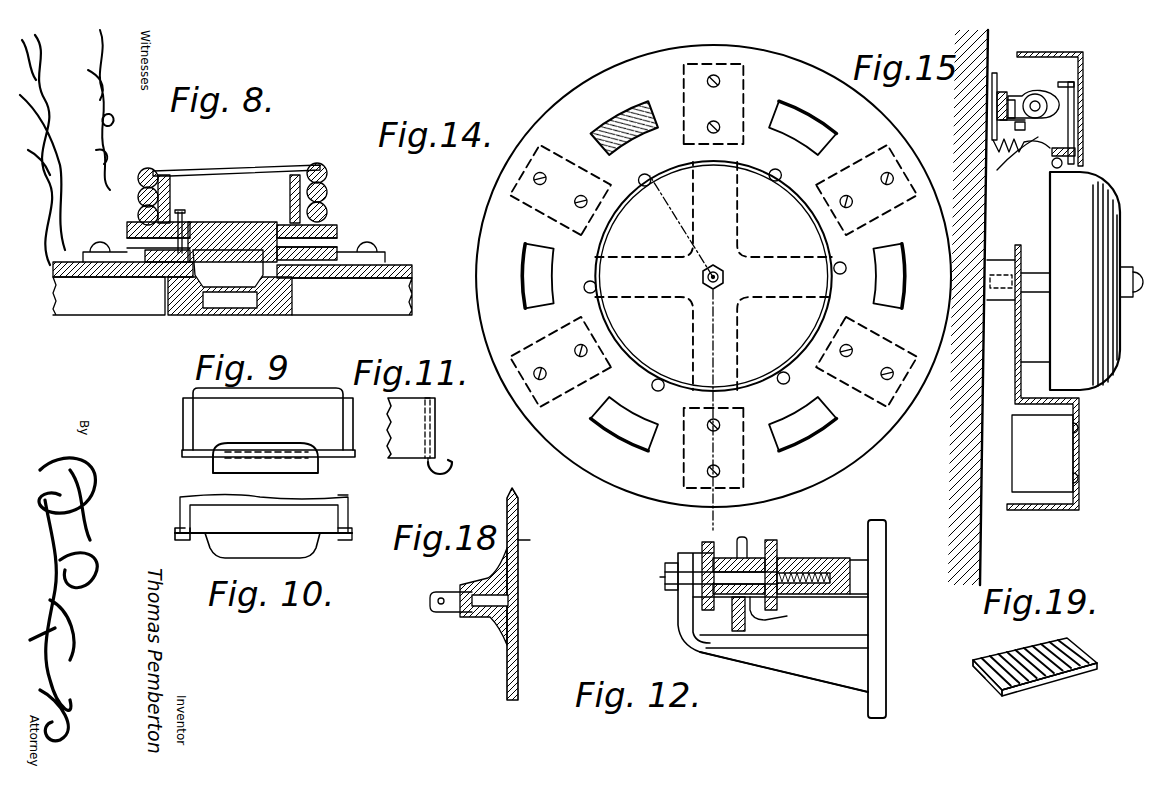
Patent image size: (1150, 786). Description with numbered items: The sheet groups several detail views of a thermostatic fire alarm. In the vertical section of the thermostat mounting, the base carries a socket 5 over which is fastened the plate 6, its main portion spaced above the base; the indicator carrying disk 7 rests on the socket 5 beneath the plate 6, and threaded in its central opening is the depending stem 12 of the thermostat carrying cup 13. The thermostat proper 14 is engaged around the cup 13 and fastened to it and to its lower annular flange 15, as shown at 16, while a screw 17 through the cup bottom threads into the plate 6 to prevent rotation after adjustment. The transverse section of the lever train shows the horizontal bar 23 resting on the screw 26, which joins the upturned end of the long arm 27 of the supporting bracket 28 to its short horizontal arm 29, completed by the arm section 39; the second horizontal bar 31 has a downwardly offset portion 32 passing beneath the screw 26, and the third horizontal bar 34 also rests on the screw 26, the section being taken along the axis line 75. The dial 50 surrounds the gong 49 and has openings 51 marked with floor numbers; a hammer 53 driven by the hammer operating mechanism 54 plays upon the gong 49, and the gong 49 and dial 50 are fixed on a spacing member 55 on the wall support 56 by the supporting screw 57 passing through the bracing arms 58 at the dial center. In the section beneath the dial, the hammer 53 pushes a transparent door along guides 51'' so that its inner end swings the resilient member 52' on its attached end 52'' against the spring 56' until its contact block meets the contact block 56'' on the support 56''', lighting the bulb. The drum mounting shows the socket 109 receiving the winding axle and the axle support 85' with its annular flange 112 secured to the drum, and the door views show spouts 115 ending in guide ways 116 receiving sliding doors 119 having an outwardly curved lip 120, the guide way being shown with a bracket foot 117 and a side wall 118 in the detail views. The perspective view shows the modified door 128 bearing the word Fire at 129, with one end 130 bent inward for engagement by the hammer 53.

In FIG. 8, the socket 5 is at (300, 286).
In FIG. 8, the plate 6 is at (122, 251).
In FIG. 8, the indicator carrying disk 7 is at (230, 282).
In FIG. 8, the depending stem 12 is at (172, 282).
In FIG. 8, the thermostat carrying cup 13 is at (170, 176).
In FIG. 8, the thermostat proper 14 is at (325, 205).
In FIG. 8, the annular flange 15 is at (330, 235).
In FIG. 14, the annular flange 15 is at (593, 85).
In FIG. 8, the fastening 16 is at (292, 215).
In FIG. 8, the screw 17 is at (186, 212).
In FIG. 12, the horizontal bar 23 is at (700, 604).
In FIG. 12, the screw 26 is at (782, 613).
In FIG. 12, the arm 27 is at (812, 655).
In FIG. 12, the supporting bracket 28 is at (878, 620).
In FIG. 12, the horizontal arm 29 is at (870, 578).
In FIG. 12, the second horizontal bar 31 is at (750, 538).
In FIG. 12, the offset portion 32 is at (732, 625).
In FIG. 12, the third horizontal bar 34 is at (778, 546).
In FIG. 12, the arm section 39 is at (700, 550).
In FIG. 14, the gong 49 is at (640, 238).
In FIG. 15, the gong 49 is at (1095, 202).
In FIG. 14, the dial 50 is at (492, 193).
In FIG. 15, the dial 50 is at (1030, 46).
In FIG. 14, the openings 51 is at (711, 292).
In FIG. 15, the openings 51 is at (1093, 116).
In FIG. 15, the guides 51'' is at (1033, 91).
In FIG. 15, the resilient member 52' is at (986, 156).
In FIG. 15, the attached end 52'' is at (966, 122).
In FIG. 14, the hammer 53 is at (774, 175).
In FIG. 15, the hammer 53 is at (1053, 168).
In FIG. 14, the hammer operating mechanism 54 is at (830, 346).
In FIG. 15, the hammer operating mechanism 54 is at (1045, 460).
In FIG. 15, the spacing member 55 is at (990, 265).
In FIG. 15, the support 56 is at (957, 307).
In FIG. 15, the spring 56' is at (965, 123).
In FIG. 15, the contact block 56'' is at (1063, 85).
In FIG. 15, the support 56''' is at (967, 93).
In FIG. 15, the supporting screw 57 is at (1030, 284).
In FIG. 14, the bracing arms 58 is at (694, 347).
In FIG. 15, the bracing arms 58 is at (1022, 362).
In FIG. 12, the axis line 75 is at (690, 547).
In FIG. 18, the axle support 85' is at (447, 619).
In FIG. 18, the socket 109 is at (518, 600).
In FIG. 18, the annular flange 112 is at (505, 668).
In FIG. 10, the spouts 115 is at (342, 520).
In FIG. 10, the guide ways 116 is at (340, 540).
In FIG. 11, the guide ways 116 is at (430, 410).
In FIG. 10, the bracket foot 117 is at (180, 540).
In FIG. 9, the side wall 118 is at (213, 468).
In FIG. 9, the sliding doors 119 is at (268, 422).
In FIG. 10, the sliding doors 119 is at (250, 515).
In FIG. 11, the sliding doors 119 is at (434, 422).
In FIG. 9, the outwardly curved lip 120 is at (300, 467).
In FIG. 10, the outwardly curved lip 120 is at (270, 545).
In FIG. 11, the outwardly curved lip 120 is at (454, 462).
In FIG. 19, the door 128 is at (1080, 654).
In FIG. 19, the word Fire 129 is at (1032, 690).
In FIG. 19, the end 130 is at (976, 675).